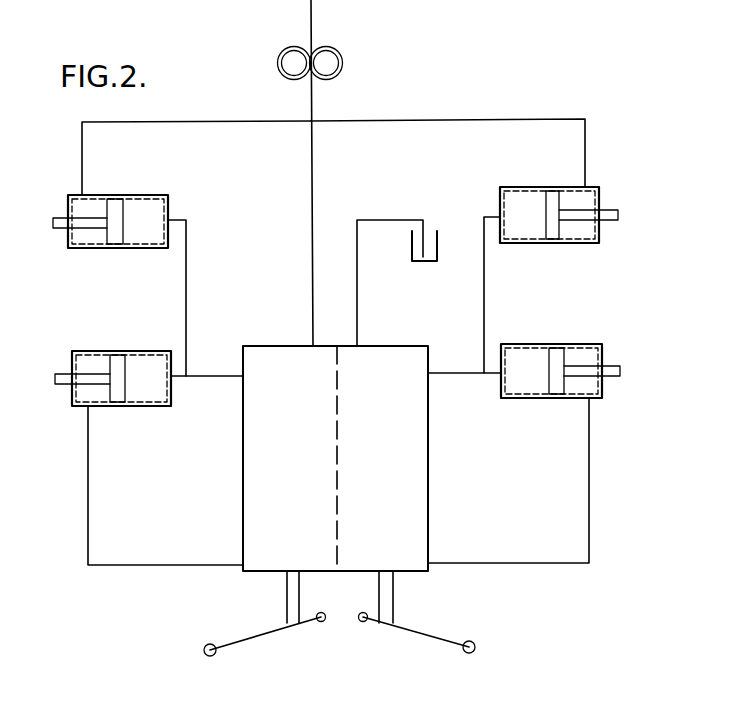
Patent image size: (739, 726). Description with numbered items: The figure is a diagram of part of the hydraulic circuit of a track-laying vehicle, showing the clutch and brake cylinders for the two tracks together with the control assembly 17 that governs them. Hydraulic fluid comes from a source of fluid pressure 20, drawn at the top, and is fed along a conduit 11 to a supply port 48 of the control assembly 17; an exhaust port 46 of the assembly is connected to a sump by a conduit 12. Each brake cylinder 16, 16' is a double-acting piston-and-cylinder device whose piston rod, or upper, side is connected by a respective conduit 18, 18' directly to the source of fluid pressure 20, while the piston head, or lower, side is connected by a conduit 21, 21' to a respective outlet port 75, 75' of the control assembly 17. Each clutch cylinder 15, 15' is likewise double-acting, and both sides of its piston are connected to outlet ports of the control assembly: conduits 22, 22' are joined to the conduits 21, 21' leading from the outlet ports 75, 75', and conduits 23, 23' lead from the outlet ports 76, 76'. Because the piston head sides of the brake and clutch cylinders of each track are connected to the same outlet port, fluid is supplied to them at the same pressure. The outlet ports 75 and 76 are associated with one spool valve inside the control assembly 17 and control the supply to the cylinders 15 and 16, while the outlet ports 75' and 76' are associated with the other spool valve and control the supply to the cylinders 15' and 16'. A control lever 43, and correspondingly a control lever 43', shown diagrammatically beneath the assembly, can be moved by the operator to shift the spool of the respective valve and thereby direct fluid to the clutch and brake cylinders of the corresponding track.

The conduit 11 is at (313, 157).
The conduit 12 is at (357, 270).
The clutch cylinder 15 is at (113, 354).
The clutch cylinder 15' is at (560, 345).
The brake cylinder 16 is at (115, 195).
The brake cylinder 16' is at (559, 192).
The control assembly 17 is at (318, 487).
The conduit 18 is at (196, 131).
The conduit 18' is at (448, 126).
The source of fluid pressure 20 is at (331, 59).
The conduit 21 is at (202, 298).
The conduit 21' is at (514, 295).
The conduit 22 is at (205, 415).
The conduit 22' is at (484, 337).
The conduit 23 is at (165, 485).
The conduit 23' is at (508, 502).
The control lever 43 is at (265, 644).
The control lever 43' is at (417, 644).
The exhaust port 46 is at (358, 345).
The supply port 48 is at (312, 346).
The outlet port 75 is at (267, 393).
The outlet port 75' is at (400, 393).
The outlet port 76 is at (268, 533).
The outlet port 76' is at (464, 541).